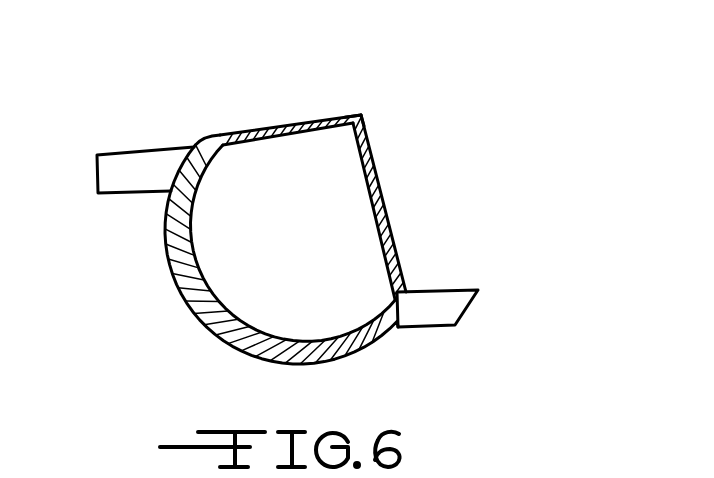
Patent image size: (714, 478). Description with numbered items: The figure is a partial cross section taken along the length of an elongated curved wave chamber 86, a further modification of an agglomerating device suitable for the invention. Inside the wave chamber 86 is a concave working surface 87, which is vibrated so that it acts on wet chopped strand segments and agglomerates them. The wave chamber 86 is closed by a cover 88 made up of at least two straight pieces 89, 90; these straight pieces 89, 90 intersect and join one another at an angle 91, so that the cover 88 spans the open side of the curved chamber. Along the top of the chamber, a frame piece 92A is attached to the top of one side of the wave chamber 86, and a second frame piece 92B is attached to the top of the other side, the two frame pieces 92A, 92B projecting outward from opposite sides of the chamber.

The wave chamber 86 is at (204, 342).
The concave working surface 87 is at (248, 320).
The cover 88 is at (380, 147).
The straight piece 89 is at (381, 196).
The straight piece 90 is at (270, 130).
The angle 91 is at (359, 116).
The frame piece 92A is at (145, 160).
The second frame piece 92B is at (442, 305).